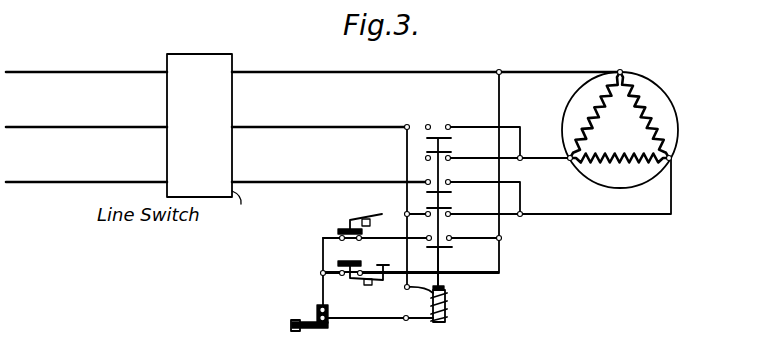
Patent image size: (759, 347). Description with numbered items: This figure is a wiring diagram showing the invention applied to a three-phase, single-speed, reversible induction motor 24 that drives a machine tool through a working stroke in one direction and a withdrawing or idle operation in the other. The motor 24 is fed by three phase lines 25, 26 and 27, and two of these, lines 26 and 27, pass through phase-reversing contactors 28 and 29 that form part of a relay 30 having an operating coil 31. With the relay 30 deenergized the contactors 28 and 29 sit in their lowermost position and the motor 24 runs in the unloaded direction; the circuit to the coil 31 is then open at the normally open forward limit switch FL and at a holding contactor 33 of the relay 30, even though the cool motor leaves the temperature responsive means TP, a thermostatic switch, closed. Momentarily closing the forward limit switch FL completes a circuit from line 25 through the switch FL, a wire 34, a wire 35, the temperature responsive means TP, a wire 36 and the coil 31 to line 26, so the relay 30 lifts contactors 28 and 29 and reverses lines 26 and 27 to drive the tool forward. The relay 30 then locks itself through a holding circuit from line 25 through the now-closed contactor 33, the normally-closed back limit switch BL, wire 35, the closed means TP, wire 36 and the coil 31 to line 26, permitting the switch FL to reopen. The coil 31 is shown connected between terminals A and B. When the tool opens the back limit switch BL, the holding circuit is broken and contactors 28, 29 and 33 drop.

The motor 24 is at (679, 108).
The phase line 25 is at (335, 73).
The phase line 26 is at (337, 127).
The phase line 27 is at (338, 182).
The phase-reversing contactor 28 is at (452, 141).
The phase-reversing contactor 29 is at (452, 196).
The relay 30 is at (446, 288).
The operating coil 31 is at (447, 312).
The holding contactor 33 is at (445, 248).
The wire 34 is at (330, 275).
The wire 35 is at (321, 283).
The wire 36 is at (372, 320).
The back limit switch BL is at (340, 230).
The forward limit switch FL is at (346, 263).
The temperature responsive means TP is at (301, 322).
The coil terminal A is at (406, 322).
The coil terminal B is at (404, 290).